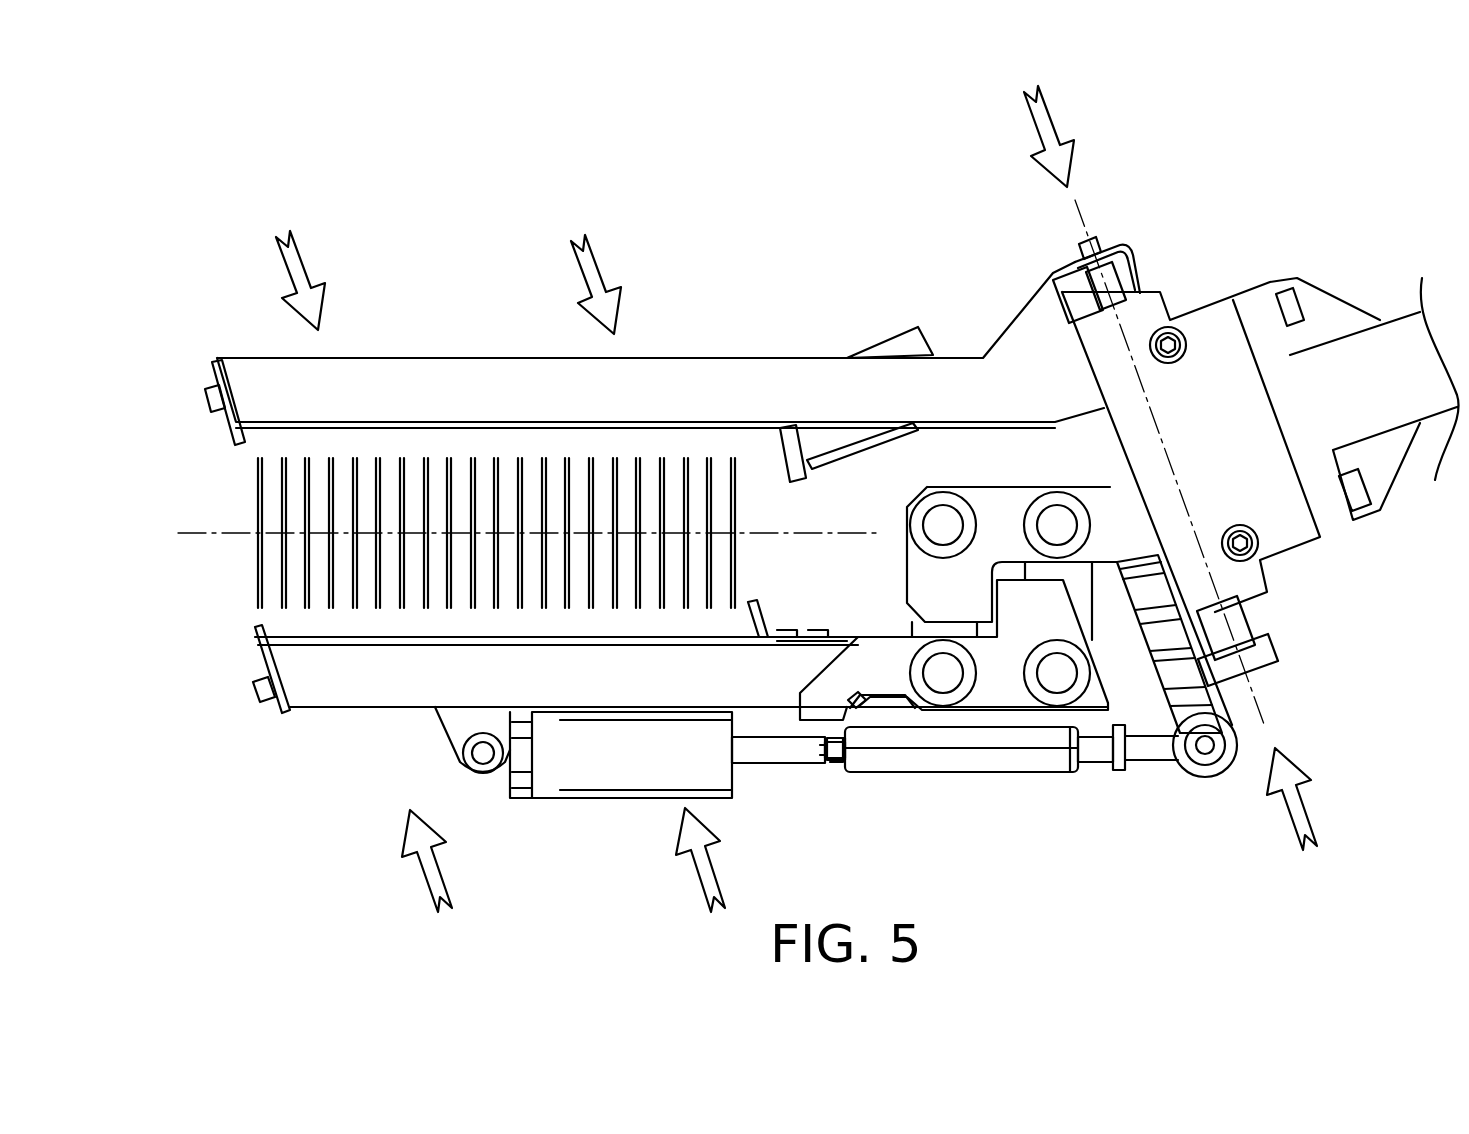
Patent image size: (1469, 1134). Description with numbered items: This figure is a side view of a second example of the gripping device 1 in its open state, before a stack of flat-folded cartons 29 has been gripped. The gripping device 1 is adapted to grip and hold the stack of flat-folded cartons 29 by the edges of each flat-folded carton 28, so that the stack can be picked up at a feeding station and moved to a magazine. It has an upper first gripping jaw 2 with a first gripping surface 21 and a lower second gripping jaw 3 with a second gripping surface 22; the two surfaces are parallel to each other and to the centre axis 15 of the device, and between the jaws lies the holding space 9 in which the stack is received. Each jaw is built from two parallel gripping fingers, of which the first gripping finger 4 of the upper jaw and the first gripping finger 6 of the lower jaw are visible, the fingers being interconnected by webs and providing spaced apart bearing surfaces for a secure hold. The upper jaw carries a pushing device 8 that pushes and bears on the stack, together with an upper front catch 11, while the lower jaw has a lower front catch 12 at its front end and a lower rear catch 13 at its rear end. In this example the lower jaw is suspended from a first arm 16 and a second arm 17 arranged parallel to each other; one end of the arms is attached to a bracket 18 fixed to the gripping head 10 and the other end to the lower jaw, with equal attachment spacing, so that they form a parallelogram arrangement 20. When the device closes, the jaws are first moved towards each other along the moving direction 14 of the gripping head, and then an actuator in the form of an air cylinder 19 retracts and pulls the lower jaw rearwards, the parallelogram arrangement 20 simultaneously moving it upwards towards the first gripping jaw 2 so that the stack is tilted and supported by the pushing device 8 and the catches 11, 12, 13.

The gripping device 1 is at (666, 231).
The first gripping jaw 2 is at (256, 336).
The second gripping jaw 3 is at (284, 738).
The first gripping finger 4 is at (420, 395).
The first gripping finger 6 is at (392, 670).
The pushing device 8 is at (888, 355).
The holding space 9 is at (206, 478).
The gripping head 10 is at (1208, 252).
The upper front catch 11 is at (262, 425).
The lower front catch 12 is at (258, 628).
The lower rear catch 13 is at (797, 592).
The moving direction 14 is at (1078, 227).
The centre axis 15 is at (208, 540).
The first arm 16 is at (945, 624).
The second arm 17 is at (1050, 574).
The bracket 18 is at (1005, 512).
The air cylinder 19 is at (598, 750).
The parallelogram arrangement 20 is at (1102, 802).
The first gripping surface 21 is at (370, 432).
The second gripping surface 22 is at (330, 620).
The flat-folded carton 28 is at (255, 590).
The stack of flat-folded cartons 29 is at (210, 513).